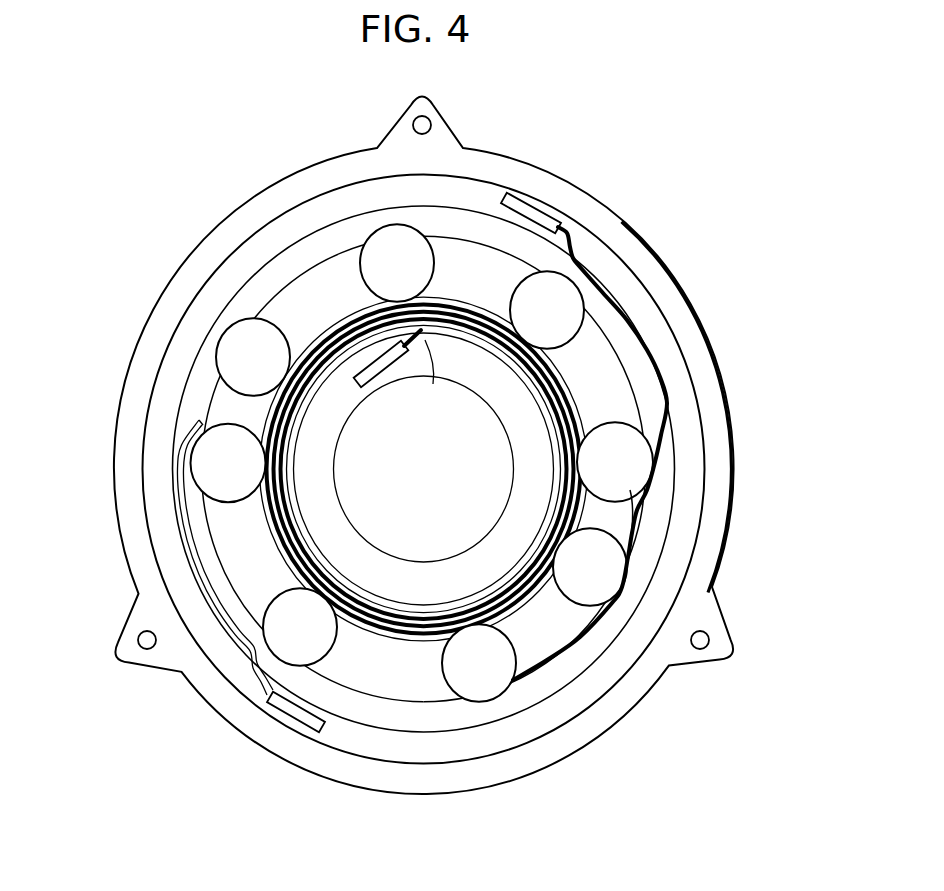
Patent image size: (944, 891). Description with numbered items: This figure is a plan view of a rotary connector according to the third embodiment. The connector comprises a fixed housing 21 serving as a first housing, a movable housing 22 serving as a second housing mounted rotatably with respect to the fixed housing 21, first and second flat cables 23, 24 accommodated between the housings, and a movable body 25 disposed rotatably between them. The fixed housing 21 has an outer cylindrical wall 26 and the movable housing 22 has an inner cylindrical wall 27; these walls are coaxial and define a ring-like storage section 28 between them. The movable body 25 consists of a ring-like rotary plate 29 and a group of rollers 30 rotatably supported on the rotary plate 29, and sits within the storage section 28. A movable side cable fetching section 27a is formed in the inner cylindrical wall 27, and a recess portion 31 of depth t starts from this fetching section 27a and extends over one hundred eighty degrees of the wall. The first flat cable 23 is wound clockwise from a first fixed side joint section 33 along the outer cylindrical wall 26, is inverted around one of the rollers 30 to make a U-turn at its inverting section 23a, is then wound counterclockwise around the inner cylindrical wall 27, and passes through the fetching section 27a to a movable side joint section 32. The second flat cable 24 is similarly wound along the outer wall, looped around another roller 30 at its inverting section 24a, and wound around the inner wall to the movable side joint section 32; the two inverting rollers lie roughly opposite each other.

The fixed housing 21 is at (692, 293).
The movable housing 22 is at (313, 515).
The first flat cable 23 is at (627, 461).
The inverting section 23a is at (628, 492).
The second flat cable 24 is at (182, 483).
The inverting section 24a is at (198, 420).
The movable body 25 is at (556, 672).
The outer cylindrical wall 26 is at (703, 386).
The inner cylindrical wall 27 is at (315, 468).
The movable side cable fetching section 27a is at (435, 384).
The storage section 28 is at (375, 718).
The rotary plate 29 is at (280, 308).
The rollers 30 is at (218, 462).
The recess portion 31 is at (542, 204).
The movable side joint section 32 is at (378, 370).
The first fixed side joint section 33 is at (287, 707).